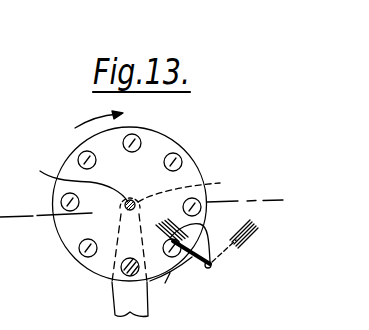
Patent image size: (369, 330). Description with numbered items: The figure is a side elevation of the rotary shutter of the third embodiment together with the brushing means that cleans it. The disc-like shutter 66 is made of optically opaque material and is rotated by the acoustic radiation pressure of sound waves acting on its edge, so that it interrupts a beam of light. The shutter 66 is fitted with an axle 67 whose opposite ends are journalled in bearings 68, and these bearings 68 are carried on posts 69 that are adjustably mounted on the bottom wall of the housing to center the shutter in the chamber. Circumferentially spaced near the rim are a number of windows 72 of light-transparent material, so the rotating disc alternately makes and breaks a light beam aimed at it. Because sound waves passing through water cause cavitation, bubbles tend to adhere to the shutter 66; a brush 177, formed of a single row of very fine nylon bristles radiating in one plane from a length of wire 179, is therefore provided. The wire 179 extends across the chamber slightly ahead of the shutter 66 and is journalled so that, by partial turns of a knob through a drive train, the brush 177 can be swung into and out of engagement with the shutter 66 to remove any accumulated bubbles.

The shutter 66 is at (195, 174).
The axle 67 is at (78, 185).
The bearings 68 is at (191, 187).
The posts 69 is at (112, 295).
The windows 72 is at (175, 157).
The brush 177 is at (211, 203).
The wire 179 is at (212, 268).